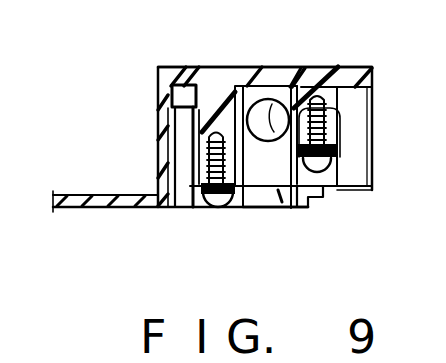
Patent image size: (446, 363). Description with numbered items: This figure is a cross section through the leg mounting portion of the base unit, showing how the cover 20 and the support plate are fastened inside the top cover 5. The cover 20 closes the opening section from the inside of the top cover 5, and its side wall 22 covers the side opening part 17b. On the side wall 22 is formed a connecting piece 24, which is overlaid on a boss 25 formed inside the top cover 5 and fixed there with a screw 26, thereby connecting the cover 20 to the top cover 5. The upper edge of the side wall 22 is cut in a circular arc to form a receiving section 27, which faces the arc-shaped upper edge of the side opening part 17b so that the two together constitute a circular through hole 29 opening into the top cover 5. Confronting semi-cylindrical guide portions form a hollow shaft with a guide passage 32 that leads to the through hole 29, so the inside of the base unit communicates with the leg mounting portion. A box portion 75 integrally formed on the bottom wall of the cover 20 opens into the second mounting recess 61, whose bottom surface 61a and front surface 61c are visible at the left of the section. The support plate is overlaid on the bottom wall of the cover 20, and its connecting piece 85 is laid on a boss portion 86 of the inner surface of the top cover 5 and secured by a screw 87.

The top cover 5 is at (320, 84).
The side opening part 17b is at (277, 116).
The cover 20 is at (292, 212).
The side wall 22 is at (263, 181).
The connecting piece 24 is at (329, 153).
The boss 25 is at (325, 106).
The screw 26 is at (327, 171).
The receiving section 27 is at (330, 128).
The through hole 29 is at (325, 84).
The guide passage 32 is at (257, 117).
The second mounting recess 61 is at (75, 175).
The bottom surface 61a is at (91, 197).
The front surface 61c is at (157, 151).
The box portion 75 is at (182, 122).
The connecting piece 85 is at (233, 209).
The boss portion 86 is at (212, 112).
The screw 87 is at (208, 209).